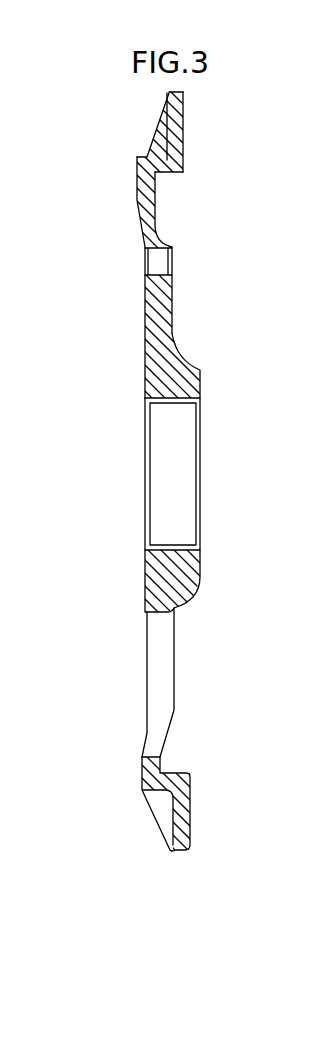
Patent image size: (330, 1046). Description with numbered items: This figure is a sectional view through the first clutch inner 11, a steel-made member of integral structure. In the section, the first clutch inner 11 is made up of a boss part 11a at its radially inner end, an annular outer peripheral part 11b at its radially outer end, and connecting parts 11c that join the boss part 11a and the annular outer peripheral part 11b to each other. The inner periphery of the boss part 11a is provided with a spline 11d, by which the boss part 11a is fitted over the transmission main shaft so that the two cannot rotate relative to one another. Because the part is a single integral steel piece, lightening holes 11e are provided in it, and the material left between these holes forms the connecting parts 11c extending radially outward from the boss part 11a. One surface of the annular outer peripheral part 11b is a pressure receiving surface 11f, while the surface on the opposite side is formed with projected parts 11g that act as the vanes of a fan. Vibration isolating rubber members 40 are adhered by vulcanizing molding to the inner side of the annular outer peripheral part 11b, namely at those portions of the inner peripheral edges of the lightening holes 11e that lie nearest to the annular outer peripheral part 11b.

The first clutch inner 11 is at (86, 218).
The boss part 11a is at (168, 378).
The annular outer peripheral part 11b is at (176, 121).
The connecting part 11c is at (163, 308).
The spline 11d is at (170, 403).
The lightening hole 11e is at (163, 662).
The pressure receiving surface 11f is at (183, 150).
The projected part 11g is at (155, 138).
The vibration isolating rubber member 40 is at (155, 763).